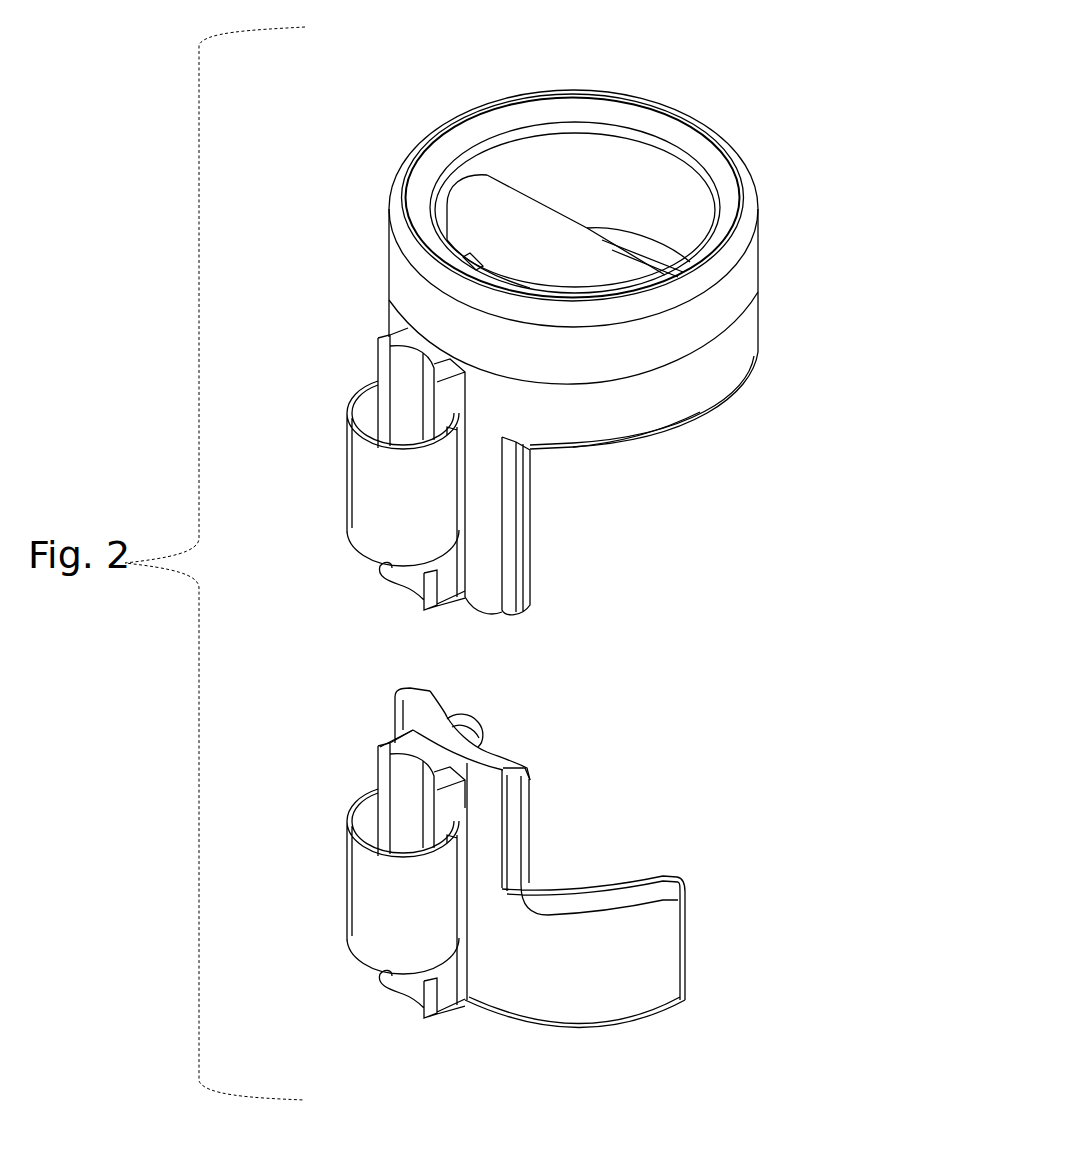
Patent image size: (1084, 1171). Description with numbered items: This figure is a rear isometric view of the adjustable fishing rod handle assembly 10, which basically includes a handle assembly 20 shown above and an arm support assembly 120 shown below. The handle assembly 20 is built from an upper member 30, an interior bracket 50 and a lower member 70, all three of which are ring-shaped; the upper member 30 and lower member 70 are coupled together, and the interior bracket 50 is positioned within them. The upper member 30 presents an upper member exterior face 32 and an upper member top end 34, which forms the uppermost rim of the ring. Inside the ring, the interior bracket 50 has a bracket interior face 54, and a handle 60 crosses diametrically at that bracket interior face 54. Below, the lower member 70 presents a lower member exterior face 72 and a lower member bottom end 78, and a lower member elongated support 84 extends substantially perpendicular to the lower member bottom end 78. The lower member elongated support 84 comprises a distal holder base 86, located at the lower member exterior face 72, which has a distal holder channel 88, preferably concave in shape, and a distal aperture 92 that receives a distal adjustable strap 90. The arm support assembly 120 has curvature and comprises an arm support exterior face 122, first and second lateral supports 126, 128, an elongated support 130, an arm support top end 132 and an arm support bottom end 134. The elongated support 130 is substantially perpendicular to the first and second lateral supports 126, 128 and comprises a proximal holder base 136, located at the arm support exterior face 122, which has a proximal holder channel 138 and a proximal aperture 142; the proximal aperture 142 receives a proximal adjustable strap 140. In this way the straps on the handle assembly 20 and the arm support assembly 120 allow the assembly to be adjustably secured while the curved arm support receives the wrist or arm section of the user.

The adjustable fishing rod handle assembly 10 is at (862, 128).
The handle assembly 20 is at (346, 169).
The upper member 30 is at (724, 90).
The upper member exterior face 32 is at (733, 295).
The upper member top end 34 is at (592, 96).
The interior bracket 50 is at (705, 199).
The bracket interior face 54 is at (690, 232).
The handle 60 is at (513, 231).
The lower member 70 is at (684, 457).
The lower member exterior face 72 is at (733, 358).
The lower member bottom end 78 is at (712, 405).
The lower member elongated support 84 is at (520, 590).
The distal holder base 86 is at (381, 375).
The distal holder channel 88 is at (392, 401).
The distal adjustable strap 90 is at (346, 498).
The distal aperture 92 is at (466, 537).
The arm support assembly 120 is at (724, 786).
The arm support exterior face 122 is at (662, 950).
The first lateral support 126 is at (690, 886).
The second lateral support 128 is at (468, 718).
The elongated support 130 is at (533, 824).
The arm support top end 132 is at (508, 769).
The arm support bottom end 134 is at (580, 1023).
The proximal holder base 136 is at (315, 766).
The proximal holder channel 138 is at (320, 801).
The proximal adjustable strap 140 is at (327, 881).
The proximal aperture 142 is at (451, 936).